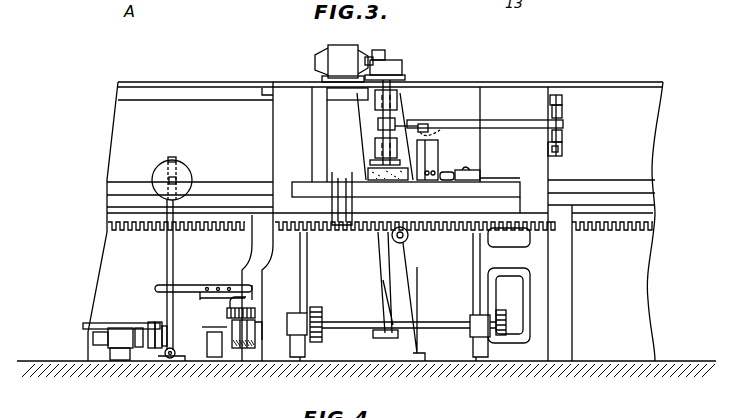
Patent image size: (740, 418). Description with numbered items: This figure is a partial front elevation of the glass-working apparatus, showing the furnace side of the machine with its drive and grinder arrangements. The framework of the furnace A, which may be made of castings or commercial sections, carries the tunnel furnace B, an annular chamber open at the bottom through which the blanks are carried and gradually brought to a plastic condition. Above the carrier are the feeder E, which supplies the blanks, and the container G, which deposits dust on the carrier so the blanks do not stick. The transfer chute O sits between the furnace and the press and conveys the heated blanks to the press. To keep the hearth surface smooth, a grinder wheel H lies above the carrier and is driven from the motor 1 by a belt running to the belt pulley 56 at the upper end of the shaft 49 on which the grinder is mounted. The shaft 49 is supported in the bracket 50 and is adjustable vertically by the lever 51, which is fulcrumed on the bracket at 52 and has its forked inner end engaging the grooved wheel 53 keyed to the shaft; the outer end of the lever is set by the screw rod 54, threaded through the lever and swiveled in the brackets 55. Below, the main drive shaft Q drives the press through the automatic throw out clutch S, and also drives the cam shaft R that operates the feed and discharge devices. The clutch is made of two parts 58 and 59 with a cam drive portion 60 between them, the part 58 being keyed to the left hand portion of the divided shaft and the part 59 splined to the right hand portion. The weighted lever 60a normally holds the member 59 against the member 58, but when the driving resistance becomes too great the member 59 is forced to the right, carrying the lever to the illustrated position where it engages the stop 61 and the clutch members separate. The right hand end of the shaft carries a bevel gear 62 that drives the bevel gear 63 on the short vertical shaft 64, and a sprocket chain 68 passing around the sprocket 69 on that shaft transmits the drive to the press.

The motor I 1 is at (324, 57).
The belt pulley 56 is at (402, 68).
The bracket 50 is at (398, 104).
The fulcrum 52 is at (425, 120).
The grooved wheel 53 is at (378, 126).
The shaft 49 is at (375, 157).
The lever 51 is at (514, 120).
The screw rod 54 is at (564, 112).
The brackets 55 is at (560, 98).
The grinder wheel H is at (368, 172).
The container G is at (438, 154).
The feeder E is at (472, 178).
The tunnel furnace B is at (180, 221).
The transfer chute O is at (330, 206).
The framework of the furnace A is at (306, 268).
The cam shaft R is at (444, 321).
The automatic throw out clutch S is at (160, 320).
The main drive shaft Q is at (93, 337).
The weighted lever 60a is at (167, 260).
The stop 61 is at (180, 288).
The sprocket 69 is at (256, 300).
The sprocket chain 68 is at (227, 306).
The clutch part 58 is at (143, 350).
The cam drive portion 60 is at (152, 350).
The clutch part 59 is at (165, 350).
The bevel gear 62 is at (212, 358).
The bevel gear 63 is at (240, 350).
The short vertical shaft 64 is at (252, 323).